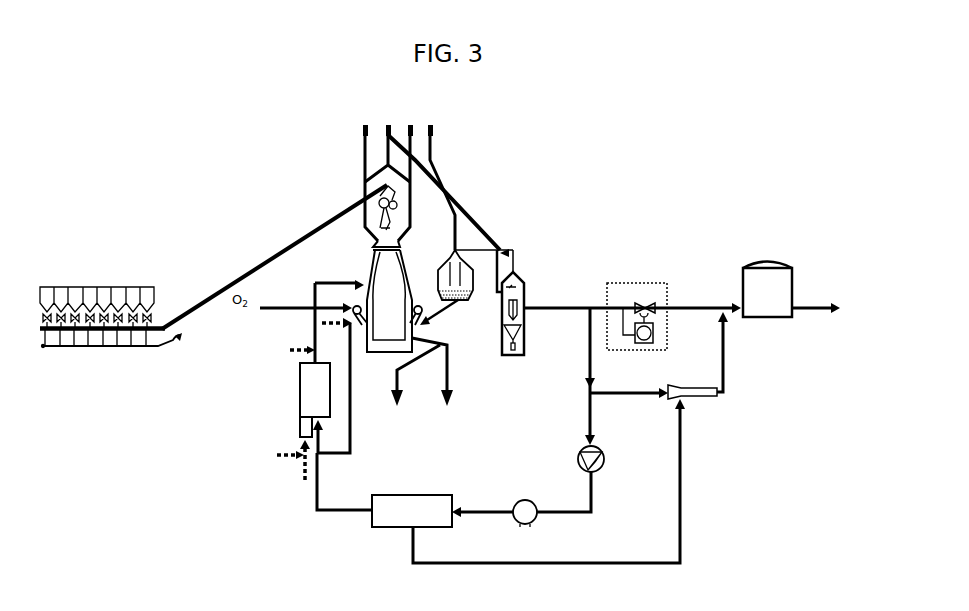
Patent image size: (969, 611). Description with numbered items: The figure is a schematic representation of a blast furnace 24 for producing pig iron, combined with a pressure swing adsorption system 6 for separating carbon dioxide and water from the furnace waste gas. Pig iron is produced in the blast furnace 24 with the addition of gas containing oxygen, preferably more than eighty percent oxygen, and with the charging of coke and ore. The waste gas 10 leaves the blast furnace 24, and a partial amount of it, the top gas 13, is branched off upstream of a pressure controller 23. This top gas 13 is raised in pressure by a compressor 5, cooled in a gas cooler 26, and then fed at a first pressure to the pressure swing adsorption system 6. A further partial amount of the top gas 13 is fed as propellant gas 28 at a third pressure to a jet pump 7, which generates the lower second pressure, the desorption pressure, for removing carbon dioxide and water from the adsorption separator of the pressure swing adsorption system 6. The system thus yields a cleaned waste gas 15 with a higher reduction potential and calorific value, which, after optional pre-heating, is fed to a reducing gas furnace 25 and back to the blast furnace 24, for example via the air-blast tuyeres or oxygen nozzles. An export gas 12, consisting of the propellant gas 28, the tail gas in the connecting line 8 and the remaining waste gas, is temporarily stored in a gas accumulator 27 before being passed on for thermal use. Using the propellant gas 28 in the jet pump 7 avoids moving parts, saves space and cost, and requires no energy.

The blast furnace 24 is at (352, 243).
The reducing gas furnace 25 is at (291, 394).
The cleaned waste gas 15 is at (323, 513).
The pressure swing adsorption system 6 is at (408, 493).
The top gas 13 is at (588, 380).
The waste gas 10 is at (545, 305).
The pressure controller 23 is at (640, 283).
The gas accumulator 27 is at (770, 246).
The export gas 12 is at (823, 303).
The propellant gas 28 is at (613, 392).
The jet pump 7 is at (693, 398).
The connecting line 8 is at (682, 445).
The compressor 5 is at (605, 457).
The gas cooler 26 is at (516, 489).